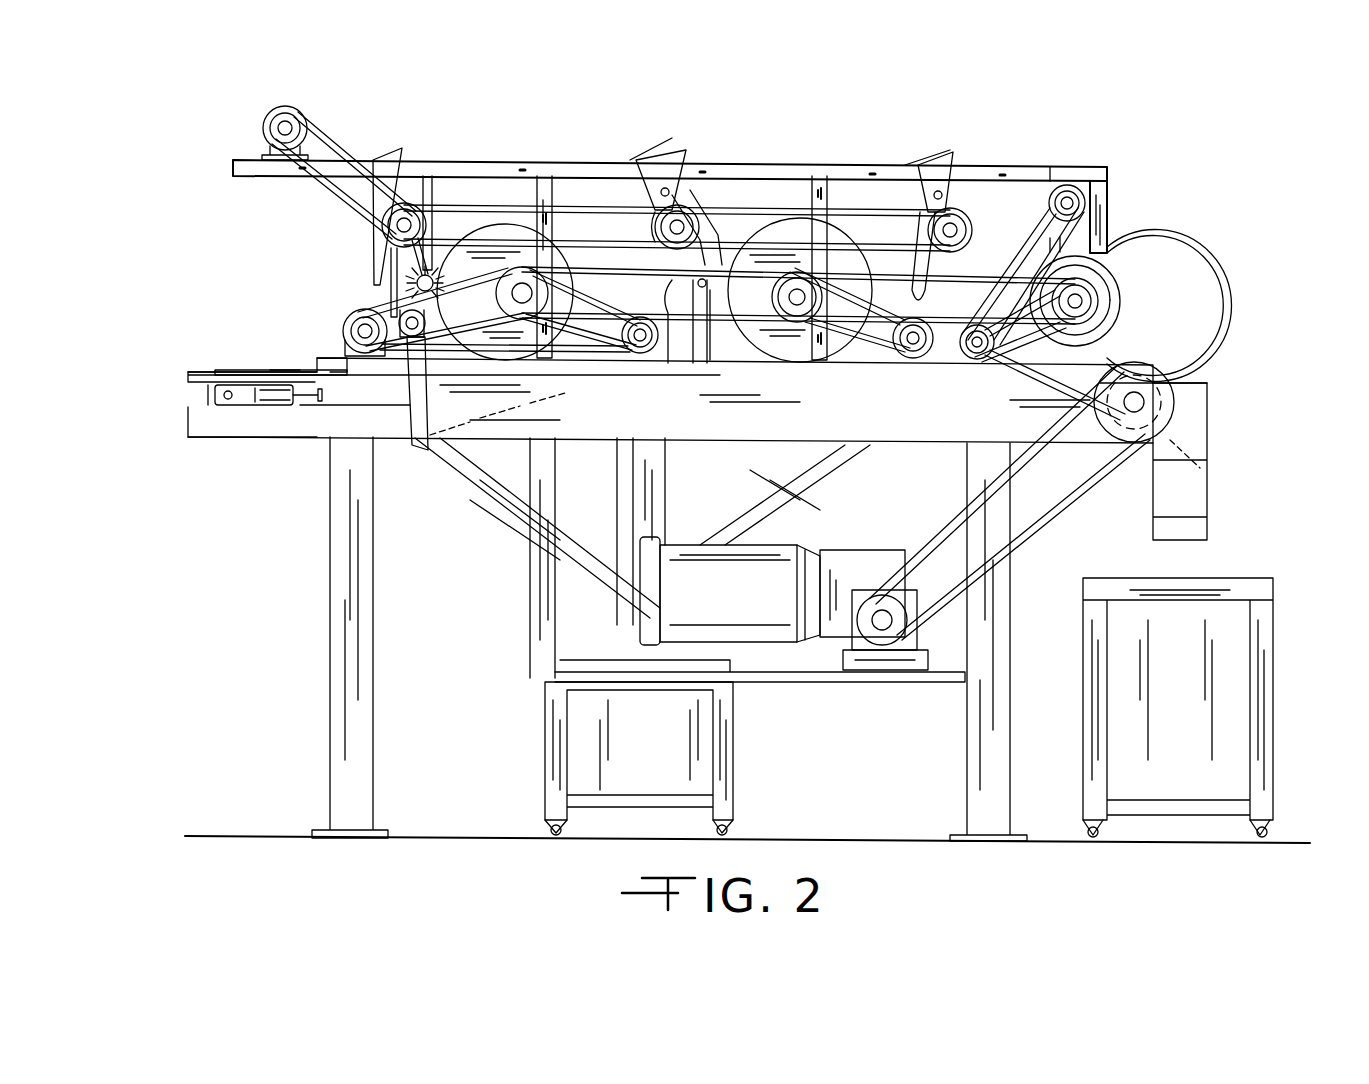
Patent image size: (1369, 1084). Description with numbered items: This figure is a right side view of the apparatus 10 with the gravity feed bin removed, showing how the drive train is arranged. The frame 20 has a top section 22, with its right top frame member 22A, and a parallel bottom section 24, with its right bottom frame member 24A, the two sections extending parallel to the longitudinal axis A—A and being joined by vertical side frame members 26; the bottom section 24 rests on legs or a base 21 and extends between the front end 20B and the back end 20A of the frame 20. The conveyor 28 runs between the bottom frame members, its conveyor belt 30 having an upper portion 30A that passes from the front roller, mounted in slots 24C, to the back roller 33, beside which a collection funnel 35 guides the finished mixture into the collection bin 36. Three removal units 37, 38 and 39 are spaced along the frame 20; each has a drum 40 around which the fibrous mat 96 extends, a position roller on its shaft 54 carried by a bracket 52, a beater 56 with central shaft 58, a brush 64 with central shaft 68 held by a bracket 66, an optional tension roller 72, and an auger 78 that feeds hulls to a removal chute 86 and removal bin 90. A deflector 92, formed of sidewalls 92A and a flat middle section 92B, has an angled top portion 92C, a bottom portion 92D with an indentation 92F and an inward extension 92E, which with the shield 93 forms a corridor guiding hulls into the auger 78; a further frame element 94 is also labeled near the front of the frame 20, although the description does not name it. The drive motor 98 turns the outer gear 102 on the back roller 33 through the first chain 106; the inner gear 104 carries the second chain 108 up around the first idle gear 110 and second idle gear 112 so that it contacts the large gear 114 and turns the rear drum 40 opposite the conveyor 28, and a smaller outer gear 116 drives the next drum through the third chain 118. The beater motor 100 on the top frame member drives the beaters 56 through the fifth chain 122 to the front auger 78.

The apparatus 10 is at (758, 137).
The frame 20 is at (428, 165).
The back end of the frame 20A is at (1112, 162).
The front end of the frame 20B is at (250, 166).
The legs or base 21 is at (375, 588).
The top section 22 is at (1100, 168).
The right top frame member 22A is at (1043, 165).
The bottom section 24 is at (262, 425).
The right bottom frame member 24A is at (216, 440).
The slots 24C is at (196, 395).
The vertical side frame members 26 is at (545, 185).
The conveyor 28 is at (240, 372).
The conveyor belt 30 is at (264, 350).
The upper portion of the conveyor belt 30A is at (300, 340).
The back roller 33 is at (1165, 385).
The collection funnel 35 is at (1210, 430).
The collection bin 36 is at (1262, 580).
The removal unit (frontmost) 37 is at (530, 147).
The removal unit (middle) 38 is at (828, 153).
The removal unit (rearmost) 39 is at (1122, 212).
The drum 40 is at (1150, 290).
The bracket 52 is at (960, 165).
The shaft of the position roller 54 is at (938, 176).
The beater 56 is at (362, 233).
The central shaft of the beater 58 is at (912, 200).
The brush 64 is at (670, 358).
The bracket for the brush 66 is at (725, 355).
The central shaft of the brush 68 is at (708, 242).
The tension roller 72 is at (405, 345).
The auger 78 is at (352, 355).
The removal chute 86 is at (800, 480).
The removal bin 90 is at (727, 762).
The deflector 92 is at (365, 250).
The sidewalls of the deflector 92A is at (640, 197).
The flat middle section of the deflector 92B is at (640, 235).
The angled top portion of the deflector 92C is at (660, 150).
The bottom portion of the deflector 92D is at (648, 271).
The extension of the deflector 92E is at (644, 286).
The indentation 92F is at (922, 239).
The shield 93 is at (378, 292).
The frame post 94 is at (458, 185).
The fibrous mat 96 is at (1140, 240).
The drive motor 98 is at (770, 630).
The beater motor 100 is at (296, 112).
The outer gear 102 is at (1150, 402).
The inner gear 104 is at (1212, 472).
The first chain 106 is at (1093, 495).
The second chain 108 is at (1130, 345).
The first idle gear 110 is at (977, 358).
The second idle gear 112 is at (1110, 174).
The large gear 114 is at (1140, 305).
The smaller outer gear 116 is at (1130, 278).
The third chain 118 is at (1150, 340).
The fifth chain 122 is at (350, 150).
The longitudinal axis A— A is at (175, 297).